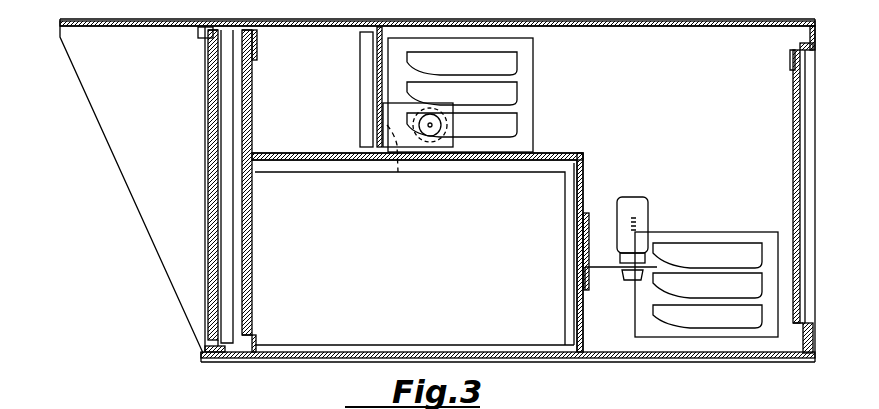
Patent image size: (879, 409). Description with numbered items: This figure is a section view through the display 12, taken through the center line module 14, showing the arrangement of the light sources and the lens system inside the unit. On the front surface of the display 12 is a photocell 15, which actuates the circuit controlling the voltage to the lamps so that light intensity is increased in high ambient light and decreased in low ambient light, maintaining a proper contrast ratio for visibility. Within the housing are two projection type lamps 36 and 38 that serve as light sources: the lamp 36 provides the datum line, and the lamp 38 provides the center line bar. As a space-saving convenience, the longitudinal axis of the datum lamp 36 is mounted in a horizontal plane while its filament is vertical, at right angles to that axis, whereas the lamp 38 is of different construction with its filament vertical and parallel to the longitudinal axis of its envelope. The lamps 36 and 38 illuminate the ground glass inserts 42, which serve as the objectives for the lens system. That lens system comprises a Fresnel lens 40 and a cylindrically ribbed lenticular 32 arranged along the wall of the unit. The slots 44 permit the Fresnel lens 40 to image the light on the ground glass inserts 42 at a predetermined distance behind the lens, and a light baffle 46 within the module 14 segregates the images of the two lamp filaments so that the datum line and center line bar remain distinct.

The display 12 is at (54, 117).
The center line module 14 is at (399, 284).
The photocell 15 is at (198, 34).
The cylindrically ribbed lenticular 32 is at (208, 166).
The projection type lamp 36 is at (433, 135).
The projection type lamp 38 is at (648, 213).
The Fresnel lens 40 is at (252, 269).
The ground glass inserts 42 is at (398, 172).
The slots 44 is at (375, 125).
The light baffle 46 is at (542, 153).